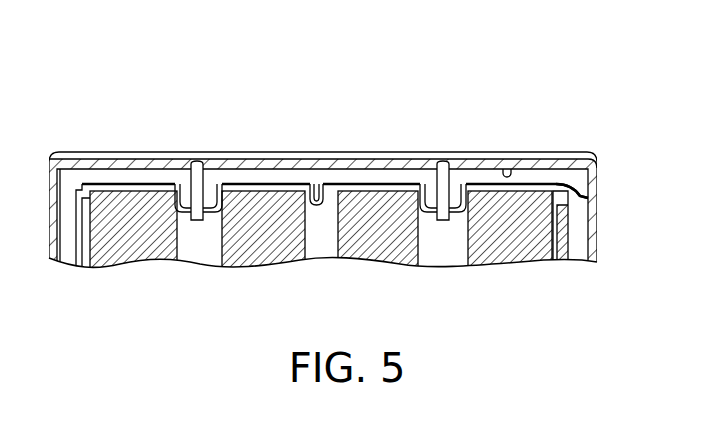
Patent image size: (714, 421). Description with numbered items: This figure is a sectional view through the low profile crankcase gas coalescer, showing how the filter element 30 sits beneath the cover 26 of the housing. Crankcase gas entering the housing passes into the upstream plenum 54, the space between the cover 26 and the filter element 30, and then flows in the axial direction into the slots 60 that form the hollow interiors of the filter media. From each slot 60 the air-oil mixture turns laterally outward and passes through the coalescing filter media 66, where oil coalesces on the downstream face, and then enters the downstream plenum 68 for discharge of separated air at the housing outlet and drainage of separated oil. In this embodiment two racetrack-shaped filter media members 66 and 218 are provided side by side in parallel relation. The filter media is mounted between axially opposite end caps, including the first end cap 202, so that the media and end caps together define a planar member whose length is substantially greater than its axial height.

The cover 26 is at (562, 163).
The upstream plenum 54 is at (507, 170).
The first end cap 202 is at (472, 186).
The coalescer filter element 30 is at (588, 202).
The slot 60 is at (447, 255).
The filter media member 218 is at (249, 256).
The coalescing filter media 66 is at (503, 258).
The downstream plenum 68 is at (553, 257).